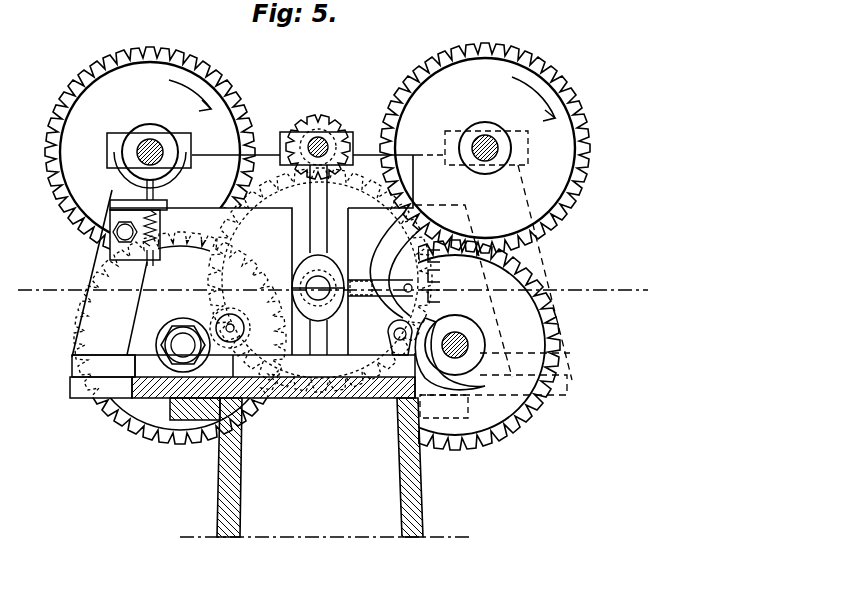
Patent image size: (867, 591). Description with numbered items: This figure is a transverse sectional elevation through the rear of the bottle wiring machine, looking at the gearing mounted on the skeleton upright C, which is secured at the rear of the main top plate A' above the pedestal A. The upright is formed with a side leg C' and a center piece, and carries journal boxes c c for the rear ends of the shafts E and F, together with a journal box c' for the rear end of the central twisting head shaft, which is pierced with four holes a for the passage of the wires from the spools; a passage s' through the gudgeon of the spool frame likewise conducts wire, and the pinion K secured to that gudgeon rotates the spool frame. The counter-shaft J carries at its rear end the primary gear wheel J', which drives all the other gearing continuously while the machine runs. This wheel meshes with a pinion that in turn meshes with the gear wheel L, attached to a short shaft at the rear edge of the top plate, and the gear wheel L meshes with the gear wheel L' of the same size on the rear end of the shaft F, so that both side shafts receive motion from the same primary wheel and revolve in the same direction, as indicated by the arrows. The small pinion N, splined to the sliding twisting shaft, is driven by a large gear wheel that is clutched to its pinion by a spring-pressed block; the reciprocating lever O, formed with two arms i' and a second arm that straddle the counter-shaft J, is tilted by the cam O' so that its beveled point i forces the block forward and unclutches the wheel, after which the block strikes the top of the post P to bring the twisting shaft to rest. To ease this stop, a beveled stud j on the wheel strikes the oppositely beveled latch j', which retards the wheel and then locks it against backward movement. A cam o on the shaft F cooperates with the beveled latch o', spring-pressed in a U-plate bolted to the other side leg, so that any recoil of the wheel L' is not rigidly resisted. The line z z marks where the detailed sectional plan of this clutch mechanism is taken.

The gear wheel L' is at (150, 150).
The gear wheel L is at (180, 338).
The shaft F is at (150, 140).
The shaft E is at (492, 138).
The journal box c is at (343, 125).
The journal box c' is at (325, 147).
The skeleton upright C is at (242, 265).
The side leg C' is at (493, 280).
The holes a is at (236, 164).
The pinion K is at (318, 126).
The pinion N is at (346, 128).
The passage s' is at (364, 164).
The cam o is at (140, 176).
The beveled latch o' is at (170, 193).
The counter-shaft J is at (455, 341).
The gear wheel J' is at (466, 345).
The beveled point i is at (386, 250).
The arm i' is at (448, 276).
The reciprocating lever O is at (397, 313).
The cam O' is at (457, 354).
The post P is at (389, 337).
The nut f is at (172, 334).
The beveled stud j is at (230, 319).
The beveled latch j' is at (248, 315).
The section line z is at (332, 289).
The pedestal A is at (325, 467).
The top plate A' is at (218, 418).